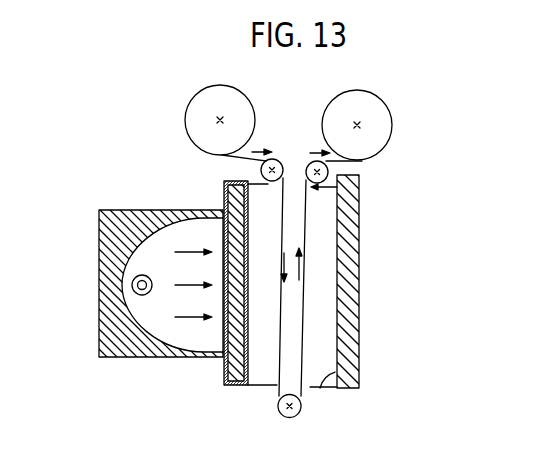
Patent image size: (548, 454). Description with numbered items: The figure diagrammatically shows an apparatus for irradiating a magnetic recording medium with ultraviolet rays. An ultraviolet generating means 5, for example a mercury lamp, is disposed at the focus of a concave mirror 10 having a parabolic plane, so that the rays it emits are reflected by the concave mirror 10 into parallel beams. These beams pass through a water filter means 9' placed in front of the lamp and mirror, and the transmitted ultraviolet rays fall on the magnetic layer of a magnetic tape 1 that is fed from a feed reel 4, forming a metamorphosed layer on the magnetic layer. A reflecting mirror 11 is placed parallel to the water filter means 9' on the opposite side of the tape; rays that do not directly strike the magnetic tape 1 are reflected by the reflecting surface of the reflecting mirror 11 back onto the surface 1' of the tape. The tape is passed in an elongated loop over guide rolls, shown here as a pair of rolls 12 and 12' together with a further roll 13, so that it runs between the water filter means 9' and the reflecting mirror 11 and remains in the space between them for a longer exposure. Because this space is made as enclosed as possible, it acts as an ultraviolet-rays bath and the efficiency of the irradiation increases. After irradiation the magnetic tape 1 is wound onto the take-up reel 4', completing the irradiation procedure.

The magnetic tape 1 is at (271, 300).
The surface of the magnetic tape 1' is at (316, 288).
The feed reel 4 is at (232, 120).
The take-up reel 4' is at (365, 120).
The ultraviolet generating means 5 is at (148, 277).
The water filter means 9' is at (235, 303).
The concave mirror 10 is at (177, 347).
The reflecting mirror 11 is at (350, 268).
The roll 12 is at (280, 149).
The roll 12' is at (306, 424).
The guide roller 13 is at (306, 160).